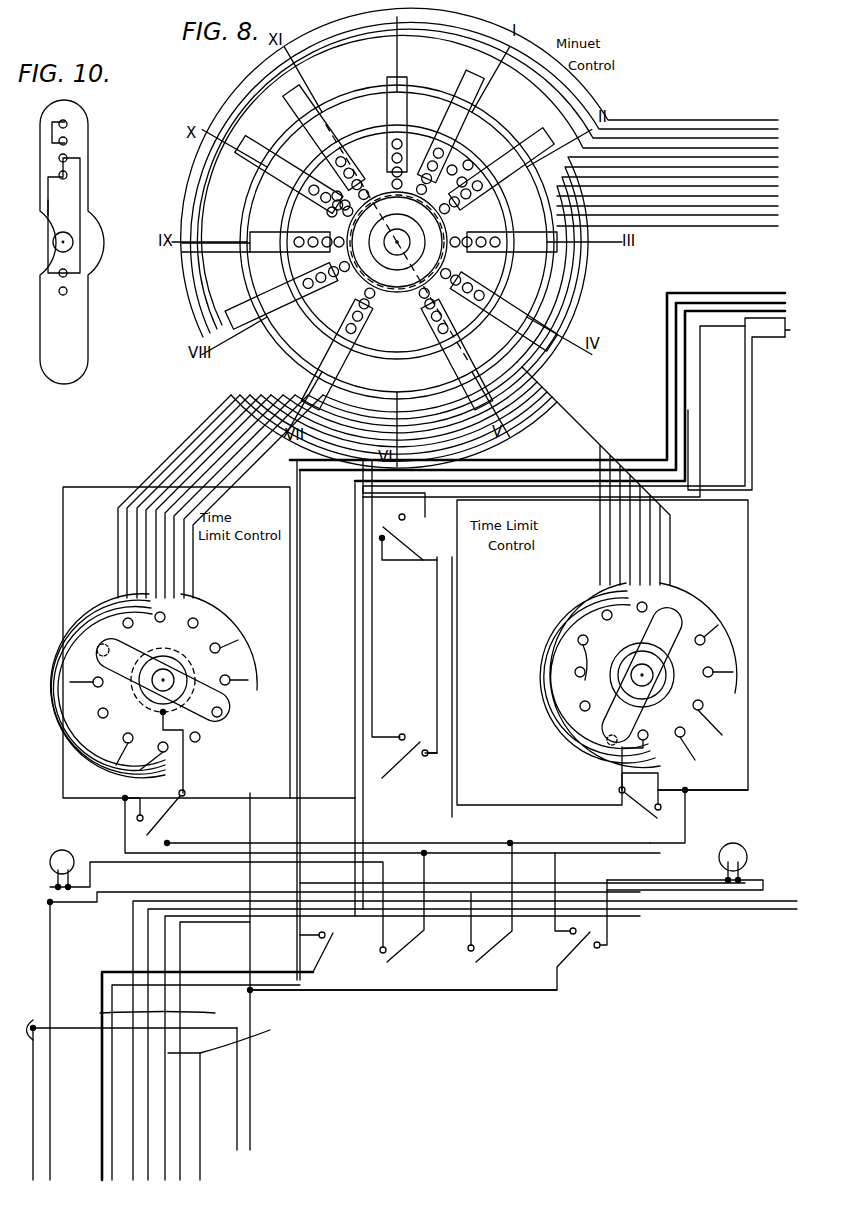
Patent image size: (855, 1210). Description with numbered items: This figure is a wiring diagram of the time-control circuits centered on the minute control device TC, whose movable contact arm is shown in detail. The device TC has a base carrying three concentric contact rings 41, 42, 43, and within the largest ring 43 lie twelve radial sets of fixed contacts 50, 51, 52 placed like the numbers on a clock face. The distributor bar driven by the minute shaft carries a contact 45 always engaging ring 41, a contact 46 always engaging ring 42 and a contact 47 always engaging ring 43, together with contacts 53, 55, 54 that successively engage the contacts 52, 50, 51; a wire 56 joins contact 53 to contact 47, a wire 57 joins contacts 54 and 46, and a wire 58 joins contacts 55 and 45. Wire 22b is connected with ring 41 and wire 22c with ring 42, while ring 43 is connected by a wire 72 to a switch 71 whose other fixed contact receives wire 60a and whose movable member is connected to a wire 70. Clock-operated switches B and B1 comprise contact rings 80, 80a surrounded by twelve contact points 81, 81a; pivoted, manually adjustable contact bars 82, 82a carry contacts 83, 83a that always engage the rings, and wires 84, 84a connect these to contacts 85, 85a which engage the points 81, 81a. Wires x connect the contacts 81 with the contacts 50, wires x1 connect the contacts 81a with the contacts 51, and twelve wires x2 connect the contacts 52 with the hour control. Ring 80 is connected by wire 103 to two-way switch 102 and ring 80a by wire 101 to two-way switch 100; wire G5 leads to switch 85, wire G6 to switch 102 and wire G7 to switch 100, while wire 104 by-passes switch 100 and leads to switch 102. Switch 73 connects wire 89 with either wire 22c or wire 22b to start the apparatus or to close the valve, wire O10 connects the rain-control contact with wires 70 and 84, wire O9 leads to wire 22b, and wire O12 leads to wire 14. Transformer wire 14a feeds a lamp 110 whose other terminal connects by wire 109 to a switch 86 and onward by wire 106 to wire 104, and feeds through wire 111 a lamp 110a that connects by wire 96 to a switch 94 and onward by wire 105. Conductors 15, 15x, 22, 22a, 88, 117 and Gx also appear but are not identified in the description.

In FIG. 8, the contact ring 41 is at (355, 248).
In FIG. 8, the contact ring 42 is at (503, 231).
In FIG. 8, the contact ring 43 is at (322, 158).
In FIG. 8, the fixed contacts 50 is at (372, 300).
In FIG. 8, the fixed contacts 51 is at (396, 285).
In FIG. 8, the fixed contacts 52 is at (378, 128).
In FIG. 10, the contact 45 is at (59, 273).
In FIG. 10, the contact 46 is at (67, 291).
In FIG. 10, the contact 47 is at (67, 124).
In FIG. 10, the contact 53 is at (67, 141).
In FIG. 10, the contact 54 is at (67, 175).
In FIG. 10, the contact 55 is at (59, 158).
In FIG. 10, the wire 56 is at (52, 133).
In FIG. 10, the wire 57 is at (48, 200).
In FIG. 10, the wire 58 is at (80, 195).
In FIG. 8, the wire 70 is at (268, 798).
In FIG. 8, the switch 71 is at (403, 768).
In FIG. 8, the wire 72 is at (372, 628).
In FIG. 8, the switch 73 is at (406, 532).
In FIG. 8, the contact ring 80 is at (707, 682).
In FIG. 8, the contact points 81 is at (587, 673).
In FIG. 8, the contact bar 82 is at (628, 752).
In FIG. 8, the contact 83 is at (623, 673).
In FIG. 8, the wire 84 is at (699, 645).
In FIG. 8, the two-way switch 85 is at (680, 615).
In FIG. 8, the contact ring 80a is at (97, 688).
In FIG. 8, the contact points 81a is at (152, 706).
In FIG. 8, the contact bar 82a is at (224, 654).
In FIG. 8, the contact 83a is at (131, 634).
In FIG. 8, the wire 84a is at (173, 700).
In FIG. 8, the contact 85a is at (225, 712).
In FIG. 8, the switch 86 is at (407, 912).
In FIG. 8, the conductor 88 is at (452, 660).
In FIG. 8, the wire 89 is at (457, 618).
In FIG. 8, the switch 94 is at (506, 956).
In FIG. 8, the wire 96 is at (468, 940).
In FIG. 8, the two-way switch 100 is at (165, 809).
In FIG. 8, the wire 101 is at (183, 780).
In FIG. 8, the two-way switch 102 is at (671, 815).
In FIG. 8, the wire 103 is at (660, 770).
In FIG. 8, the wire 104 is at (125, 825).
In FIG. 8, the wire 105 is at (525, 870).
In FIG. 8, the wire 106 is at (432, 880).
In FIG. 8, the wire 109 is at (172, 892).
In FIG. 8, the lamp 110 is at (50, 850).
In FIG. 8, the lamp 110a is at (745, 845).
In FIG. 8, the wire 111 is at (483, 870).
In FIG. 8, the switch 117 is at (329, 952).
In FIG. 8, the wire 14 is at (129, 1087).
In FIG. 8, the transformer wire 14a is at (50, 915).
In FIG. 8, the conductor 15 is at (766, 300).
In FIG. 8, the conductor 15x is at (672, 278).
In FIG. 8, the conductor 22 is at (668, 912).
In FIG. 8, the conductor 22a is at (742, 912).
In FIG. 8, the wire 22b is at (355, 503).
In FIG. 8, the wire 22c is at (455, 440).
In FIG. 8, the wire 60a is at (748, 384).
In FIG. 8, the wire G5 is at (720, 372).
In FIG. 8, the wire G6 is at (700, 300).
In FIG. 8, the wire G7 is at (728, 424).
In FIG. 8, the conductor Gx is at (670, 312).
In FIG. 8, the wires x is at (479, 192).
In FIG. 8, the wires x1 is at (321, 253).
In FIG. 8, the wires x2 is at (479, 235).
In FIG. 8, the switch B is at (638, 675).
In FIG. 8, the switch B1 is at (159, 686).
In FIG. 8, the circuit controlling device TC is at (194, 85).
In FIG. 8, the wire O9 is at (247, 1036).
In FIG. 8, the wire O10 is at (250, 1092).
In FIG. 8, the wire O12 is at (100, 1013).